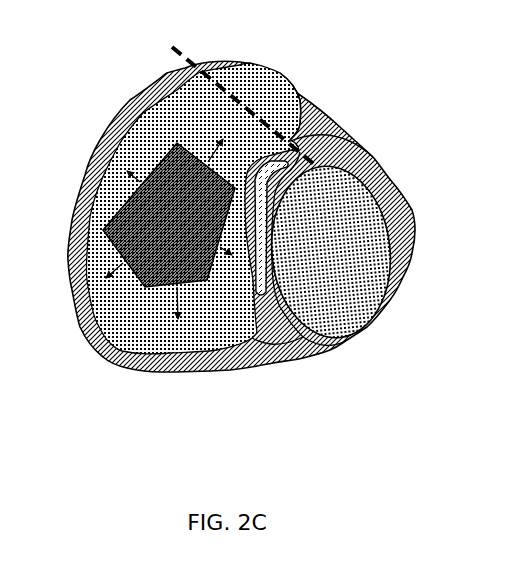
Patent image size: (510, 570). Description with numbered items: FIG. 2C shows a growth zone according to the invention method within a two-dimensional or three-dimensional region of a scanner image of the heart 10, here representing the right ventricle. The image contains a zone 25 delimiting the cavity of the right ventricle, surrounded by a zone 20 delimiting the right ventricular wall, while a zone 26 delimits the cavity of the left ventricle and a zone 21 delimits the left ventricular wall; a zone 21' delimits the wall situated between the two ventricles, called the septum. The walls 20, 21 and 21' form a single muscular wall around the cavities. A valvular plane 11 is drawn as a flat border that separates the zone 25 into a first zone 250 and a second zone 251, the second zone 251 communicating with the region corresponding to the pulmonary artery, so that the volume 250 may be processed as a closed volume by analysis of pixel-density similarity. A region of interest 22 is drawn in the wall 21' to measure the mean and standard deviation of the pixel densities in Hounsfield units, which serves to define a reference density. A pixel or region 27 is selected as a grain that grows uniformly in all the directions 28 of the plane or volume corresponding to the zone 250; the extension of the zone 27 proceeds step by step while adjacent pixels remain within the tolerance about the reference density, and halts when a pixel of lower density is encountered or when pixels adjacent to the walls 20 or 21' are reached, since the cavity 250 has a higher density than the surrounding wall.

The composite structure 10 is at (334, 60).
The valvular plane 11 is at (184, 55).
The wall of the right ventricle 20 is at (131, 106).
The wall of the left ventricle 21 is at (354, 142).
The septum wall 21' is at (299, 354).
The region of interest 22 is at (327, 128).
The right ventricle cavity zone 25 is at (251, 72).
The first zone 250 is at (136, 140).
The second zone 251 is at (272, 82).
The left ventricle cavity zone 26 is at (343, 312).
The growth zone 27 is at (124, 233).
The growth directions 28 is at (210, 160).